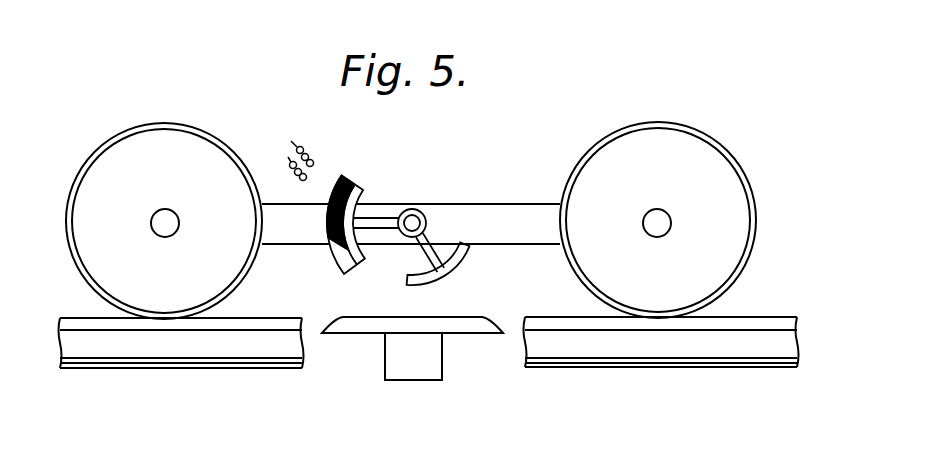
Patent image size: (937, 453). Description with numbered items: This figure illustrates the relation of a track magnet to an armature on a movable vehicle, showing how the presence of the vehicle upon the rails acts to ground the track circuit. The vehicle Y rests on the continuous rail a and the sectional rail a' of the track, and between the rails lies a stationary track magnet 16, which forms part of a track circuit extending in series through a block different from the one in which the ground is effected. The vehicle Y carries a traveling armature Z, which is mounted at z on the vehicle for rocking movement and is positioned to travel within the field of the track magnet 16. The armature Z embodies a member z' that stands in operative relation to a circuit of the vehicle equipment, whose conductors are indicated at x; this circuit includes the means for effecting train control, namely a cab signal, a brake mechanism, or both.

The vehicle Y is at (583, 164).
The continuous rail a is at (181, 367).
The sectional rail a' is at (661, 359).
The track magnet 16 is at (370, 333).
The conductors x is at (322, 194).
The mounting of the armature z is at (400, 221).
The member of the armature z' is at (362, 210).
The traveling armature Z is at (462, 276).